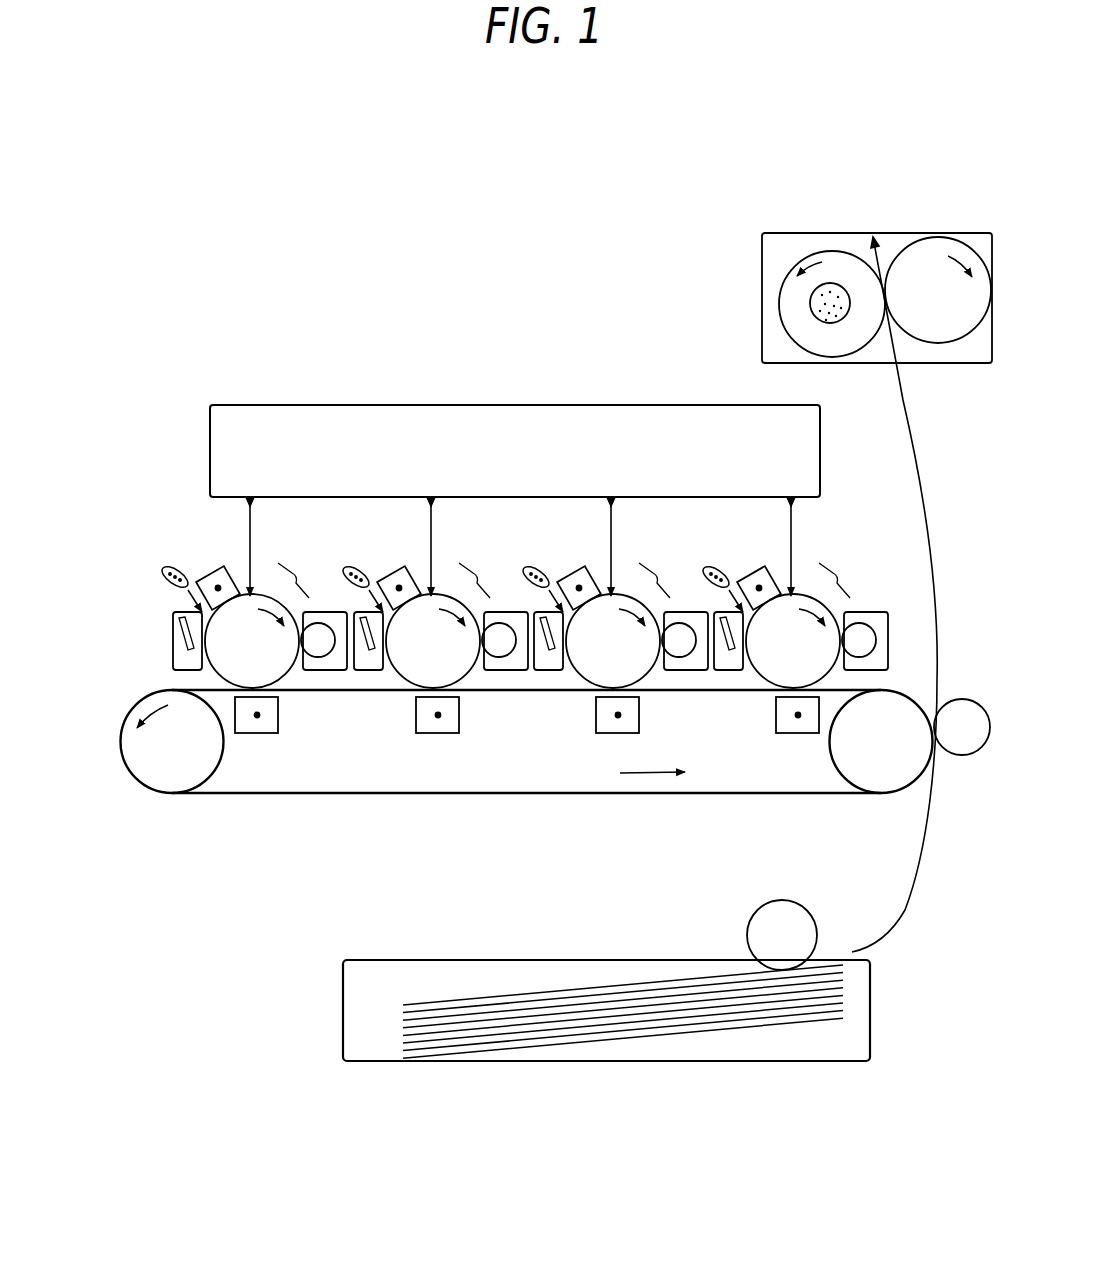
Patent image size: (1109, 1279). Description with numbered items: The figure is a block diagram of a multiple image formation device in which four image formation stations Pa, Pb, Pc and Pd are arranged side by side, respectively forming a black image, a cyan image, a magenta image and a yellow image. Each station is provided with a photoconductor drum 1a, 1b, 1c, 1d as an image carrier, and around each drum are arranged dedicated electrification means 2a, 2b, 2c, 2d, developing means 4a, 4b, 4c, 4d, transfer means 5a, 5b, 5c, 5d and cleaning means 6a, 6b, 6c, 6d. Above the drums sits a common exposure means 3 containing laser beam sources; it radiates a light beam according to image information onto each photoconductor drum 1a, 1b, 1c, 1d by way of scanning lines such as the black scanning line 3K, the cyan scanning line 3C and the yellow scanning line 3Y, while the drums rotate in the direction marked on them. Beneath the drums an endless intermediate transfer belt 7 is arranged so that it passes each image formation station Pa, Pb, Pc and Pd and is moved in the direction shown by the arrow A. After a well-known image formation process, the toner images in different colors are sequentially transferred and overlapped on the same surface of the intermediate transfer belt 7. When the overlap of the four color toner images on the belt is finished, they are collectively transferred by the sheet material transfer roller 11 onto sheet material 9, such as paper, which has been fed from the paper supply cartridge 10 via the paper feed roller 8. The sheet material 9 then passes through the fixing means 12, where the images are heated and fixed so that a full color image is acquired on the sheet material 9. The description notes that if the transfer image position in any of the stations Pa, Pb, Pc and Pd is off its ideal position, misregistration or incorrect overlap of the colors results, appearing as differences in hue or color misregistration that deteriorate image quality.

The photoconductor drum 1a is at (774, 668).
The photoconductor drum 1b is at (592, 668).
The photoconductor drum 1c is at (418, 672).
The photoconductor drum 1d is at (287, 682).
The electrification means 2a is at (757, 568).
The electrification means 2b is at (565, 602).
The electrification means 2c is at (402, 587).
The electrification means 2d is at (210, 575).
The exposure means 3 is at (822, 428).
The scanning line 3Y is at (249, 507).
The scanning line 3C is at (431, 507).
The scanning line 3K is at (791, 505).
The developing means 4a is at (866, 670).
The developing means 4b is at (688, 670).
The developing means 4c is at (503, 672).
The developing means 4d is at (327, 672).
The transfer means 5a is at (797, 733).
The transfer means 5b is at (620, 733).
The transfer means 5c is at (442, 733).
The transfer means 5d is at (250, 733).
The cleaning means 6a is at (713, 598).
The cleaning means 6b is at (532, 600).
The cleaning means 6c is at (353, 597).
The cleaning means 6d is at (172, 612).
The intermediate transfer belt 7 is at (192, 797).
The paper feed roller 8 is at (760, 940).
The sheet material 9 is at (905, 920).
The paper supply cartridge 10 is at (357, 1065).
The sheet material transfer roller 11 is at (962, 757).
The fixing means 12 is at (943, 216).
The image formation station Pa is at (850, 566).
The image formation station Pb is at (663, 568).
The image formation station Pc is at (486, 566).
The image formation station Pd is at (304, 566).
The arrow A is at (652, 755).